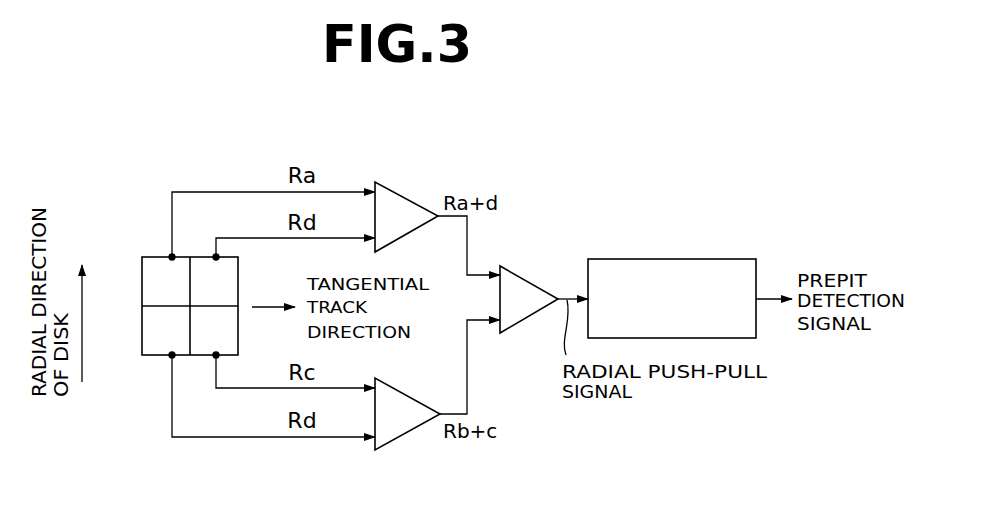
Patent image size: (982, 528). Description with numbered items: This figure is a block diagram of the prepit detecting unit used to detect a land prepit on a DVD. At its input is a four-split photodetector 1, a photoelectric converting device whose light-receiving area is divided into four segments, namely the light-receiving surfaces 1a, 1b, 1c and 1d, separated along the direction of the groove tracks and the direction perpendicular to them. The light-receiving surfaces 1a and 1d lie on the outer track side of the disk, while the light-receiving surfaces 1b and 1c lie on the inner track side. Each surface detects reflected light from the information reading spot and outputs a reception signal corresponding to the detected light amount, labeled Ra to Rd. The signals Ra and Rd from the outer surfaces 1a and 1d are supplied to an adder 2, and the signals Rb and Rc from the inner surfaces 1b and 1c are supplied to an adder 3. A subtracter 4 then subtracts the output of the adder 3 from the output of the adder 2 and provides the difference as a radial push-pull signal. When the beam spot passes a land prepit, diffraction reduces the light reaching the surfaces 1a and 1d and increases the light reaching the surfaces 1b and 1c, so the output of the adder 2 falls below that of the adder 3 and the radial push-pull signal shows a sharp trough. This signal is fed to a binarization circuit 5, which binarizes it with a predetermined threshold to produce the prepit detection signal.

The 4-split photodetector 1 is at (130, 305).
The light-receiving surface 1a is at (158, 262).
The light-receiving surface 1b is at (157, 350).
The light-receiving surface 1c is at (205, 350).
The light-receiving surface 1d is at (205, 262).
The adder 2 is at (413, 200).
The adder 3 is at (405, 433).
The subtracter 4 is at (537, 280).
The binarization circuit 5 is at (720, 259).